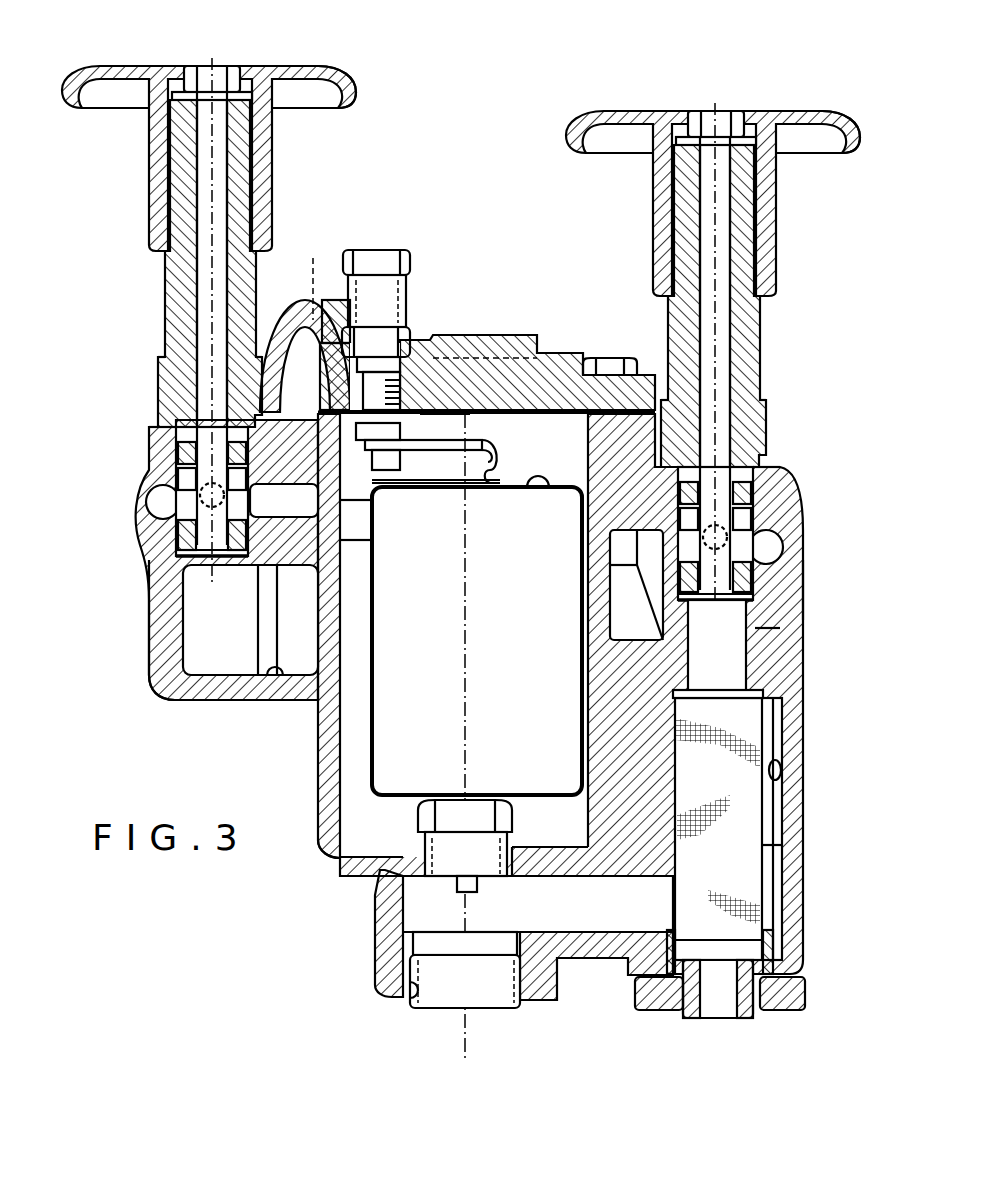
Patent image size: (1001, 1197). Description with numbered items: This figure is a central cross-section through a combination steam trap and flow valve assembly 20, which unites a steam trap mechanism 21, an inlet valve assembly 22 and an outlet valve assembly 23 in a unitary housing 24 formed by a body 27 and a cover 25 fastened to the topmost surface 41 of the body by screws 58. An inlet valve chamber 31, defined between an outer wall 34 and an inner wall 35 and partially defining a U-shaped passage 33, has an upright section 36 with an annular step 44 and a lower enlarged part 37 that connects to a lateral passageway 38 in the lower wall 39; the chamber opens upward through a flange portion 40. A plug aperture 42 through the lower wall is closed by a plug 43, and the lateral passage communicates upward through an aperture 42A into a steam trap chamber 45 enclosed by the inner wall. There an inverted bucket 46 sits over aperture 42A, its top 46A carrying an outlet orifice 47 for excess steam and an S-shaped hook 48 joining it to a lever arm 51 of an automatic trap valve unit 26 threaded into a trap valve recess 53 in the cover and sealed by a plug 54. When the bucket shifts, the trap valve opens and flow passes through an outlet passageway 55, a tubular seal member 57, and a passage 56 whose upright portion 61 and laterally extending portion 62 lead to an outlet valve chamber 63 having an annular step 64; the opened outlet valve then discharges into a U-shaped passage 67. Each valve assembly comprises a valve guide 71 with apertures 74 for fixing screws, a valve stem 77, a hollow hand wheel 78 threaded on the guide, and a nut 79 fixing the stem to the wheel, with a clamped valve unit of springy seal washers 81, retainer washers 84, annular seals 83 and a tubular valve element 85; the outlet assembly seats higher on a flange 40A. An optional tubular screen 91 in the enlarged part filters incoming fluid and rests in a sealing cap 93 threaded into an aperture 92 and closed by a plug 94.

The combination steam trap and flow valve assembly 20 is at (466, 138).
The steam trap mechanism 21 is at (450, 402).
The inlet valve assembly 22 is at (775, 382).
The outlet valve assembly 23 is at (133, 232).
The unitary housing 24 is at (145, 642).
The cover 25 is at (526, 336).
The automatic trap valve unit 26 is at (443, 418).
The body 27 is at (165, 700).
The inlet valve chamber 31 is at (612, 545).
The U-shaped passage 33 is at (620, 578).
The outer wall 34 is at (155, 585).
The inner wall 35 is at (300, 712).
The upright section 36 is at (727, 660).
The enlarged part 37 is at (780, 760).
The lateral passageway 38 is at (590, 920).
The lower wall 39 is at (537, 997).
The flange portion 40 is at (766, 425).
The flange 40A is at (148, 427).
The topmost surface 41 is at (556, 385).
The plug aperture 42 is at (417, 998).
The aperture 42A is at (405, 800).
The plug 43 is at (430, 1015).
The annular step 44 is at (775, 628).
The steam trap chamber 45 is at (322, 855).
The inverted bucket 46 is at (378, 706).
The top of inverted bucket 46A is at (505, 475).
The outlet orifice 47 is at (538, 480).
The S-shaped hook 48 is at (492, 478).
The lever arm 51 is at (445, 448).
The trap valve recess 53 is at (336, 280).
The plug 54 is at (378, 249).
The outlet passageway 55 is at (315, 310).
The passage 56 is at (374, 478).
The tubular seal member 57 is at (297, 348).
The screws 58 is at (610, 355).
The upright portion 61 is at (340, 515).
The laterally extending portion 62 is at (340, 548).
The outlet valve chamber 63 is at (193, 482).
The annular step 64 is at (150, 622).
The U-shaped passage 67 is at (268, 688).
The valve guide 71 is at (165, 312).
The apertures 74 is at (160, 366).
The valve stem 77 is at (198, 262).
The hand wheel 78 is at (312, 78).
The nut 79 is at (248, 64).
The springy seal washers 81 is at (178, 438).
The annular seal 83 is at (160, 503).
The retainer washer 84 is at (192, 447).
The tubular valve element 85 is at (187, 533).
The tubular screen 91 is at (777, 845).
The aperture 92 is at (775, 928).
The sealing cap 93 is at (782, 1008).
The plug 94 is at (742, 1017).